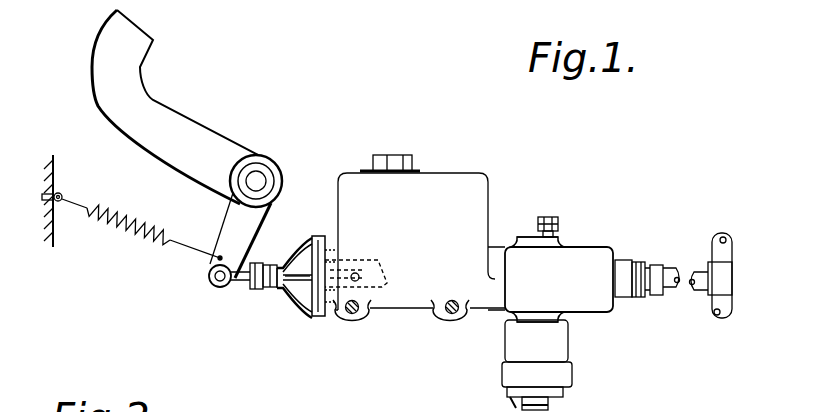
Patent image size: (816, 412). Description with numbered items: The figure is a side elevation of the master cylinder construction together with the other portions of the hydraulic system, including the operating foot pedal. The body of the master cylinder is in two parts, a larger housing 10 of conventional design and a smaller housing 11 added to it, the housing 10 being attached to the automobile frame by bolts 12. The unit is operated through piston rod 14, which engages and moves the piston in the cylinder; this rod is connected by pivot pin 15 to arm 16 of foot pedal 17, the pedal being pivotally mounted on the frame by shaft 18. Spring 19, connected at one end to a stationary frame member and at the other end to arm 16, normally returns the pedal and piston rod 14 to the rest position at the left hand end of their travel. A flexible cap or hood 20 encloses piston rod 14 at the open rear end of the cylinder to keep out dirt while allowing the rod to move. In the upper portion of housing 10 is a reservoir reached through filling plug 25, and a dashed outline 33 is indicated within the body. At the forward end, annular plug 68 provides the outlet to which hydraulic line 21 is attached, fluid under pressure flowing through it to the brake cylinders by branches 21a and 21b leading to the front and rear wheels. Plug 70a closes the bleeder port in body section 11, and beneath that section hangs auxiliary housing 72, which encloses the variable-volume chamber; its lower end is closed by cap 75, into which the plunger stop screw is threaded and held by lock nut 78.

The housing 10 is at (452, 192).
The housing 11 is at (578, 260).
The bolts 12 is at (350, 322).
The piston rod 14 is at (298, 284).
The pivot pin 15 is at (217, 283).
The arm 16 is at (233, 212).
The foot pedal 17 is at (173, 120).
The shaft 18 is at (260, 180).
The spring 19 is at (142, 229).
The flexible cap or hood 20 is at (292, 238).
The hydraulic line 21 is at (672, 268).
The branch 21a is at (720, 307).
The branch 21b is at (723, 241).
The filling plug 25 is at (400, 155).
The piston 33 is at (367, 262).
The annular plug 68 is at (622, 263).
The plug 70a is at (548, 217).
The auxiliary housing 72 is at (568, 352).
The cap 75 is at (560, 393).
The lock nut 78 is at (547, 407).